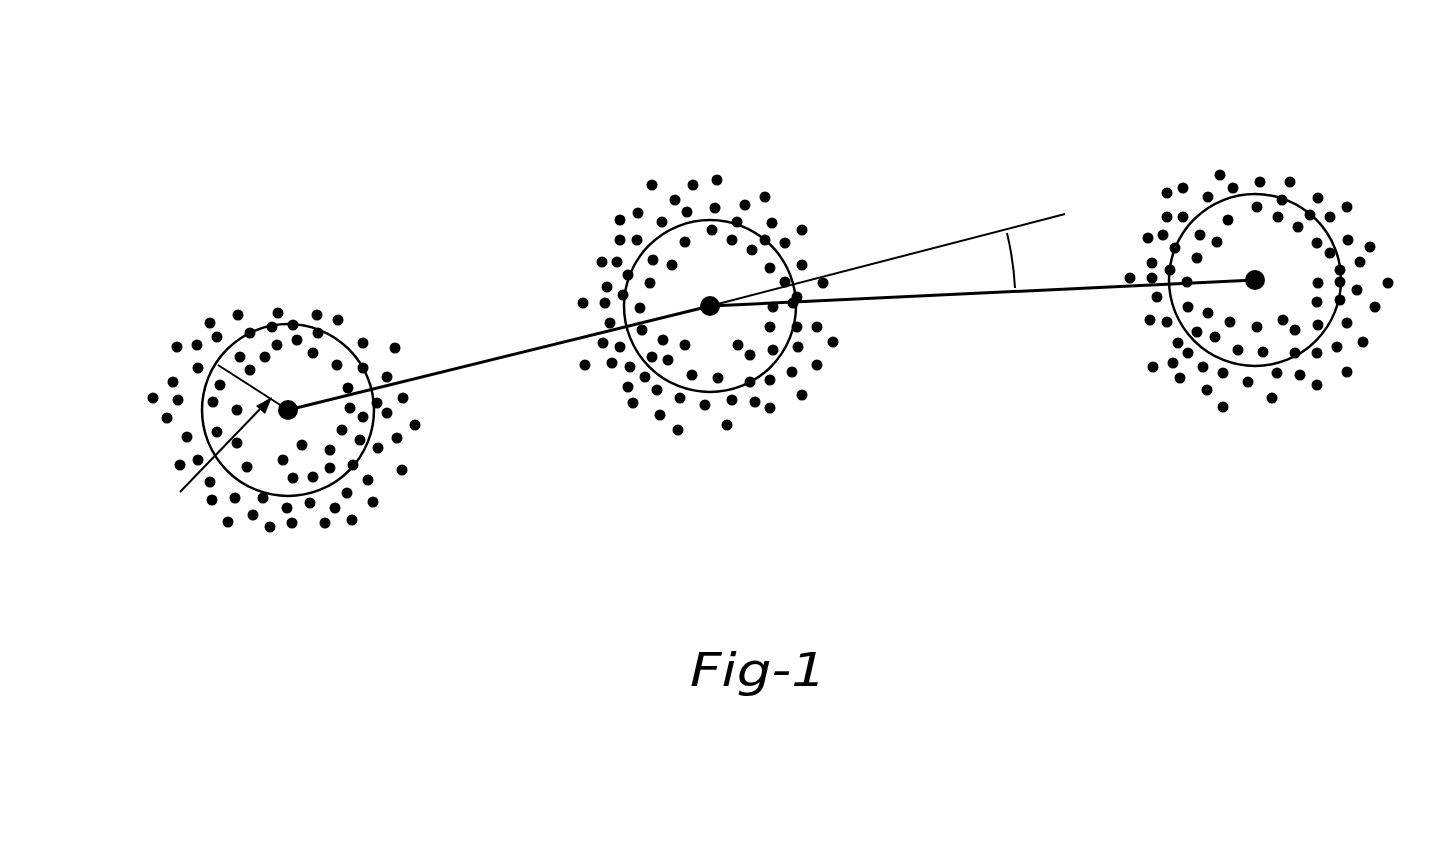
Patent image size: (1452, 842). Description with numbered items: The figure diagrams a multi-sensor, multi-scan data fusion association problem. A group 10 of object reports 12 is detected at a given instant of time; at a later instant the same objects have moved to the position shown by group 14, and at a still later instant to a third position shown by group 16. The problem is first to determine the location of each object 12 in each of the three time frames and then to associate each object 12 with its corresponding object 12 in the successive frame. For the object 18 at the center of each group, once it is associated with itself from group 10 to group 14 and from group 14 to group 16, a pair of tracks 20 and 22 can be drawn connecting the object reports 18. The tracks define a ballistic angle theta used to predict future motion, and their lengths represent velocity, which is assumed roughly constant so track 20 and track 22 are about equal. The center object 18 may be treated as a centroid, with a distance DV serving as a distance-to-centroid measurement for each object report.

The group of object reports 10 is at (318, 273).
The object reports 12 is at (210, 323).
The group of object reports 14 is at (661, 117).
The group of object reports 16 is at (1252, 116).
The object report at center of group 18 is at (288, 403).
The track 20 is at (473, 363).
The track 22 is at (1080, 288).
The distance to centroid DV is at (210, 455).